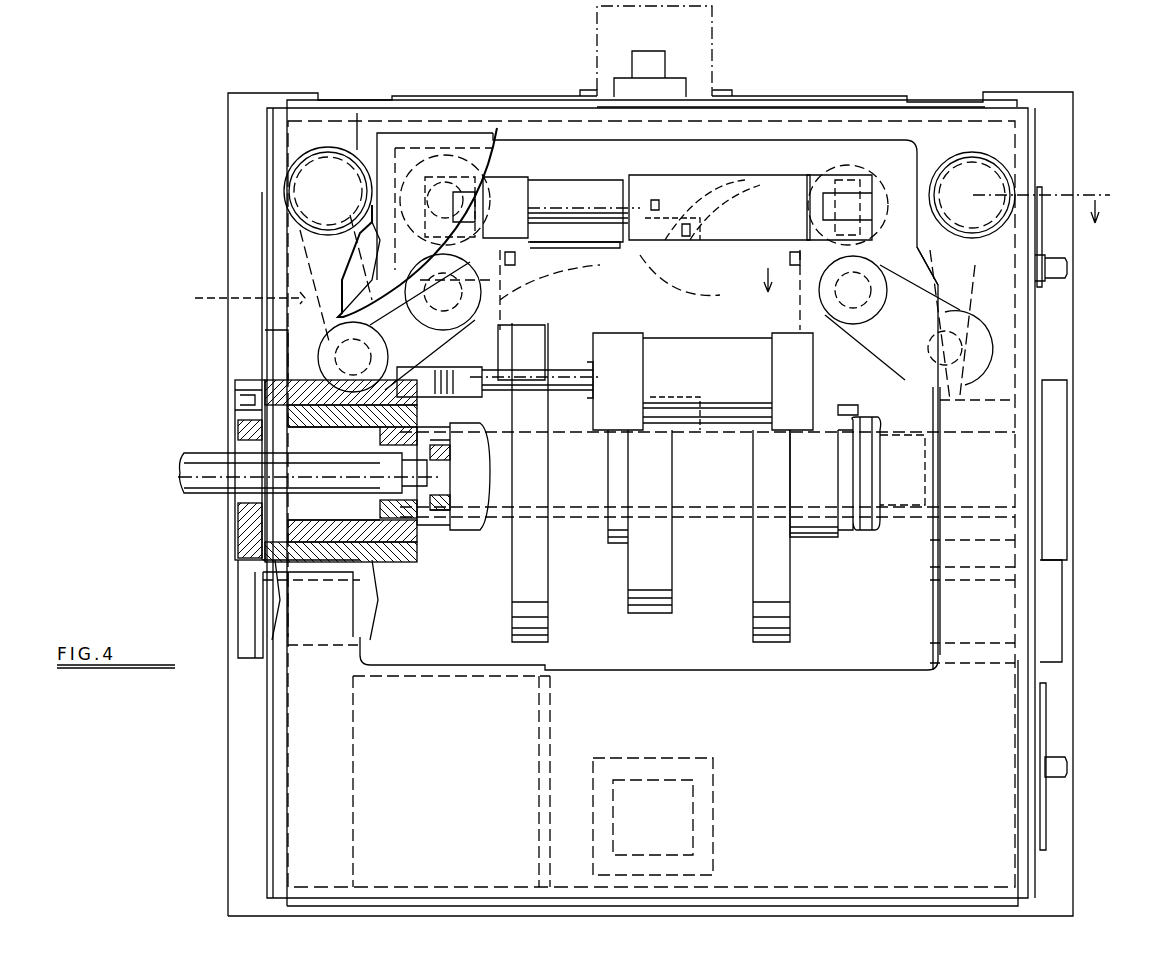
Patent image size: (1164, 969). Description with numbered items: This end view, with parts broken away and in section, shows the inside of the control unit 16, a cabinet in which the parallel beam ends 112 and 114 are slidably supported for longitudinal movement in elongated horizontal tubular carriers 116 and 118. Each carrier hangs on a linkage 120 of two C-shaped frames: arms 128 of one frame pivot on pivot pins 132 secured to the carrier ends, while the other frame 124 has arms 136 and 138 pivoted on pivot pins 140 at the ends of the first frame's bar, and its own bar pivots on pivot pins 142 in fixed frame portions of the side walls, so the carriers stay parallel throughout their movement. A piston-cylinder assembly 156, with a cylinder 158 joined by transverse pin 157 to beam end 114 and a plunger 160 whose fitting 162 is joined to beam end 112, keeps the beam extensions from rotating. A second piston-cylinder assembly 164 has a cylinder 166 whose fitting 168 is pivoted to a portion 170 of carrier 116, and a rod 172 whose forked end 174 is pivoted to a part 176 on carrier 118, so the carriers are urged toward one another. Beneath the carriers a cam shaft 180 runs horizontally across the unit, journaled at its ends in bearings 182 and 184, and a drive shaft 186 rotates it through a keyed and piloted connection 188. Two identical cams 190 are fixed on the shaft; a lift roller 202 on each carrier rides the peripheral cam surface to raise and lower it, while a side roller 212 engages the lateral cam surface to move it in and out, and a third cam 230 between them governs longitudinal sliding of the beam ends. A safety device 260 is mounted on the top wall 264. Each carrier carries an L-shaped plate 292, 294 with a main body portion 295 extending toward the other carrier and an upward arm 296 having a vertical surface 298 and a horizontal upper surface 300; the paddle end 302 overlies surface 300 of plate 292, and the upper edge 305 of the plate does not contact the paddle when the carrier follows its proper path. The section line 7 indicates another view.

The control unit 16 is at (216, 164).
The section line 7 is at (931, 244).
The beam end 112 is at (435, 213).
The beam end 114 is at (868, 208).
The tubular carrier 116 is at (443, 157).
The tubular carrier 118 is at (852, 160).
The linkage 120 is at (1105, 313).
The C-shaped frame 124 is at (310, 326).
The arm 128 is at (400, 335).
The pivot pin 132 is at (560, 270).
The arm 136 is at (1060, 250).
The arm 138 is at (330, 265).
The pivot pin 140 is at (330, 360).
The pivot pin 142 is at (313, 200).
The piston-cylinder assembly 156 is at (800, 156).
The transverse pin 157 is at (866, 178).
The cylinder 158 is at (782, 209).
The plunger 160 is at (543, 187).
The fitting 162 is at (512, 178).
The piston-cylinder assembly 164 is at (639, 326).
The cylinder 166 is at (728, 364).
The fitting 168 is at (828, 438).
The portion of carrier 170 is at (888, 395).
The rod 172 is at (563, 375).
The forked end 174 is at (455, 398).
The part of carrier 176 is at (440, 470).
The cam shaft 180 is at (580, 540).
The bearing 182 is at (400, 432).
The bearing 184 is at (898, 545).
The drive shaft 186 is at (213, 490).
The keyed and piloted connection 188 is at (398, 487).
The cam 190 is at (553, 633).
The lift roller 202 is at (525, 316).
The side roller 212 is at (493, 346).
The third cam 230 is at (678, 573).
The safety device 260 is at (694, 70).
The top wall 264 is at (884, 97).
The L-shaped plate 292 is at (550, 290).
The L-shaped plate 294 is at (720, 290).
The main body portion 295 is at (640, 323).
The arm 296 is at (620, 228).
The vertical surface 298 is at (584, 208).
The horizontal surface 300 is at (712, 205).
The paddle end 302 is at (688, 178).
The upper edge 305 is at (580, 246).